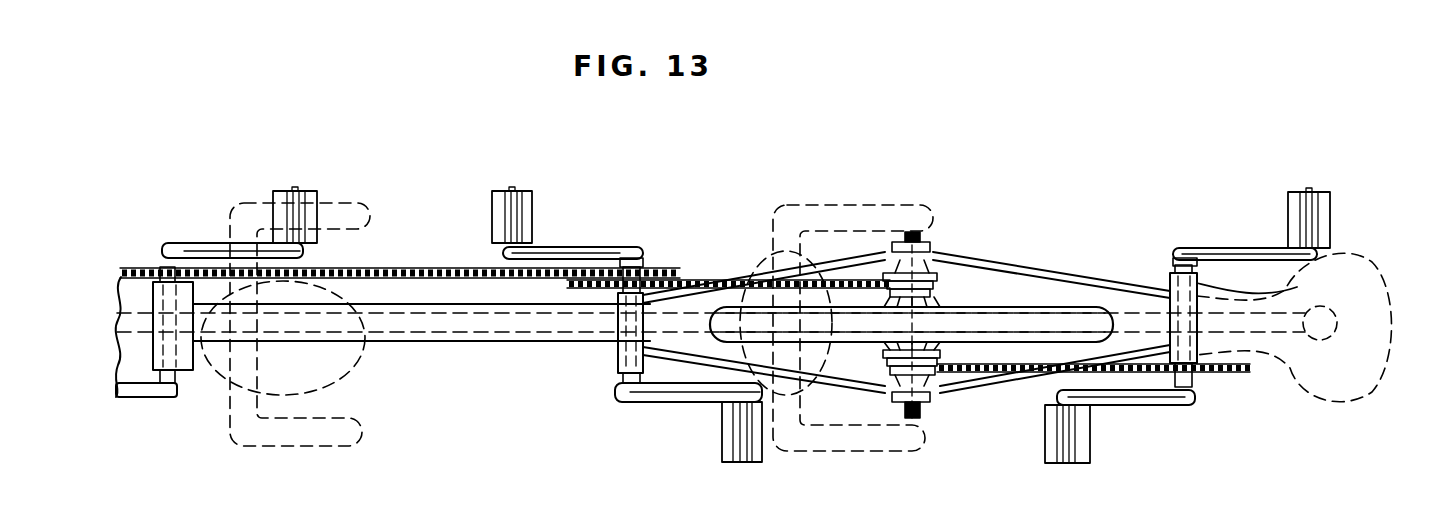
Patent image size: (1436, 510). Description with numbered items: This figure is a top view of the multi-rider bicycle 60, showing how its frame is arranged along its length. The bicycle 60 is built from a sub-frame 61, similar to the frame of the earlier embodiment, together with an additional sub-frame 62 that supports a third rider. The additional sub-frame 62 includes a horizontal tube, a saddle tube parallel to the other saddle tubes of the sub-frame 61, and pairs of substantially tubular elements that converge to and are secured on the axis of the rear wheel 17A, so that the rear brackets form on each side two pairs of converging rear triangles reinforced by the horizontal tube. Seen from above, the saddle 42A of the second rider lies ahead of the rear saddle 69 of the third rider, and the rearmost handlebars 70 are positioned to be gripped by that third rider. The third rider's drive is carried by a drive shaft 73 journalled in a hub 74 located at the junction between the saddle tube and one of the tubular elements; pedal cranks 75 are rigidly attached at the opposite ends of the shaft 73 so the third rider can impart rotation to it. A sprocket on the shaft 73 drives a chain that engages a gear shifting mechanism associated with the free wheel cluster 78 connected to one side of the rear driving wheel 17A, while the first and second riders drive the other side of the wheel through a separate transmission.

The rear wheel 17A is at (998, 305).
The saddle 42A is at (762, 258).
The bicycle 60 is at (1002, 193).
The sub-frame 61 is at (446, 343).
The additional sub-frame 62 is at (1080, 306).
The rear saddle 69 is at (1360, 397).
The rearmost handlebars 70 is at (813, 205).
The drive shaft 73 is at (1173, 270).
The hub 74 is at (1297, 287).
The pedal cranks 75 is at (1230, 248).
The free wheel cluster 78 is at (943, 388).